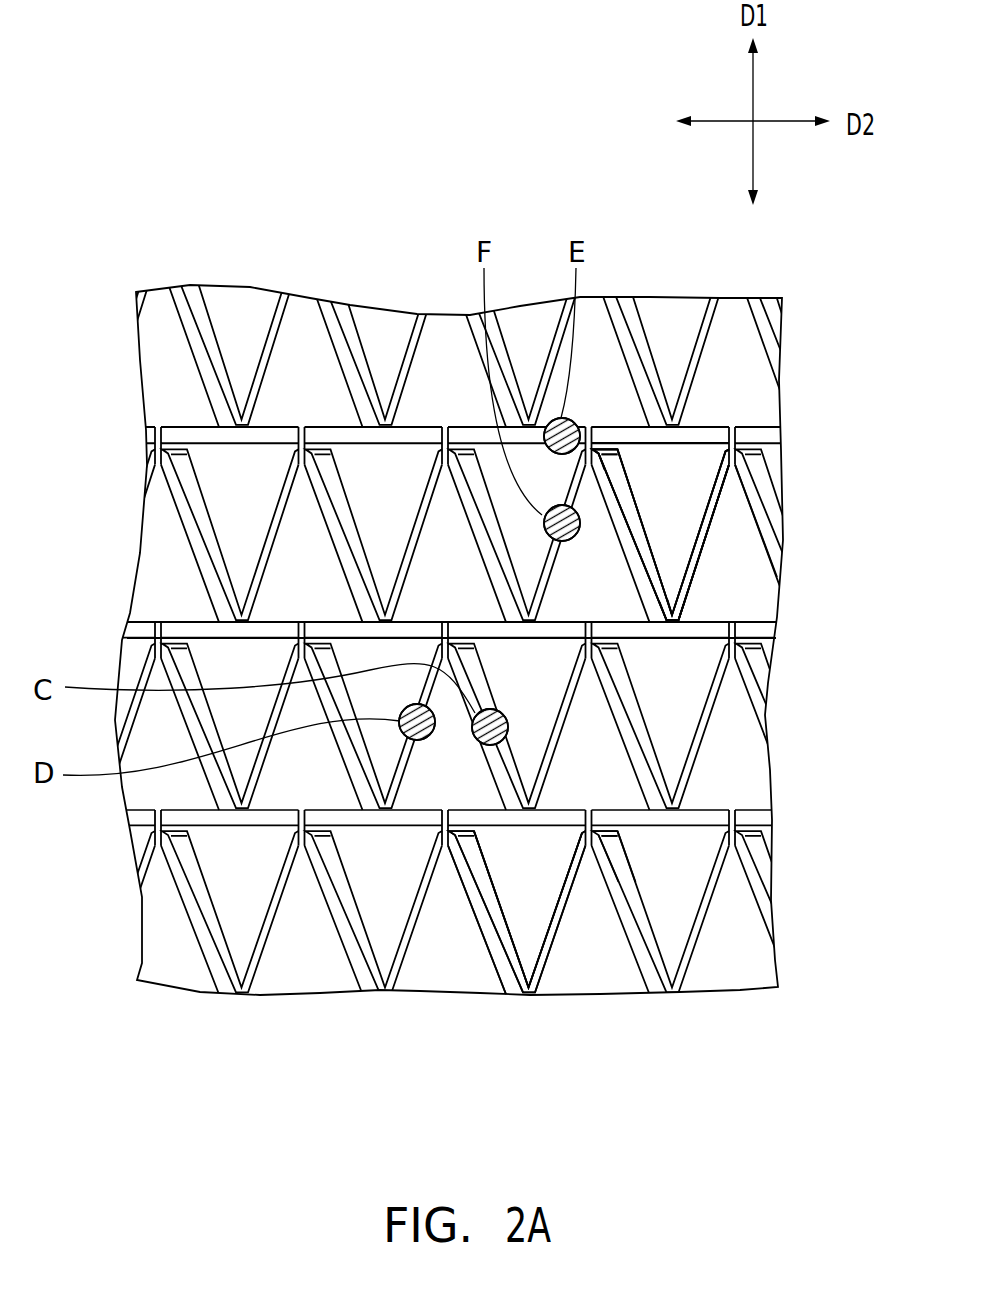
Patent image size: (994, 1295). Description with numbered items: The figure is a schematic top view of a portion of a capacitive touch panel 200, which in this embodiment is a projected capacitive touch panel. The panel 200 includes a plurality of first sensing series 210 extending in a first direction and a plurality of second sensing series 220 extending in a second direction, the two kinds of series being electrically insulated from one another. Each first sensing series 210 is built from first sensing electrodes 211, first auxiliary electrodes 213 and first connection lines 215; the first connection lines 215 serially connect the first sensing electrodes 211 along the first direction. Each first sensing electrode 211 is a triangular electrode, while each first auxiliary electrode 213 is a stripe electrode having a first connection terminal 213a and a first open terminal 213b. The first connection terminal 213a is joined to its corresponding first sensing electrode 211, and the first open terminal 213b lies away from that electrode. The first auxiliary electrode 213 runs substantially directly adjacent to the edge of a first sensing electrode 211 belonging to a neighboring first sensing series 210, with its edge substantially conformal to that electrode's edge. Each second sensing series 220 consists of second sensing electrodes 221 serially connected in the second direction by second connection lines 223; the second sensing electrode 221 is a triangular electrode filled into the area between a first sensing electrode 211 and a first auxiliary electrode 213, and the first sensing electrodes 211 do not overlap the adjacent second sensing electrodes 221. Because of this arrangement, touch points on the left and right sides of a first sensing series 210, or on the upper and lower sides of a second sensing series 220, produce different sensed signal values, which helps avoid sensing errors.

The capacitive touch panel 200 is at (848, 1095).
The first sensing series 210 is at (872, 487).
The first sensing electrode 211 is at (734, 562).
The first auxiliary electrode 213 is at (633, 537).
The first connection terminal 213a is at (655, 603).
The first open terminal 213b is at (613, 478).
The first connection line 215 is at (774, 632).
The second sensing series 220 is at (520, 1064).
The second sensing electrode 221 is at (522, 902).
The second connection line 223 is at (603, 840).